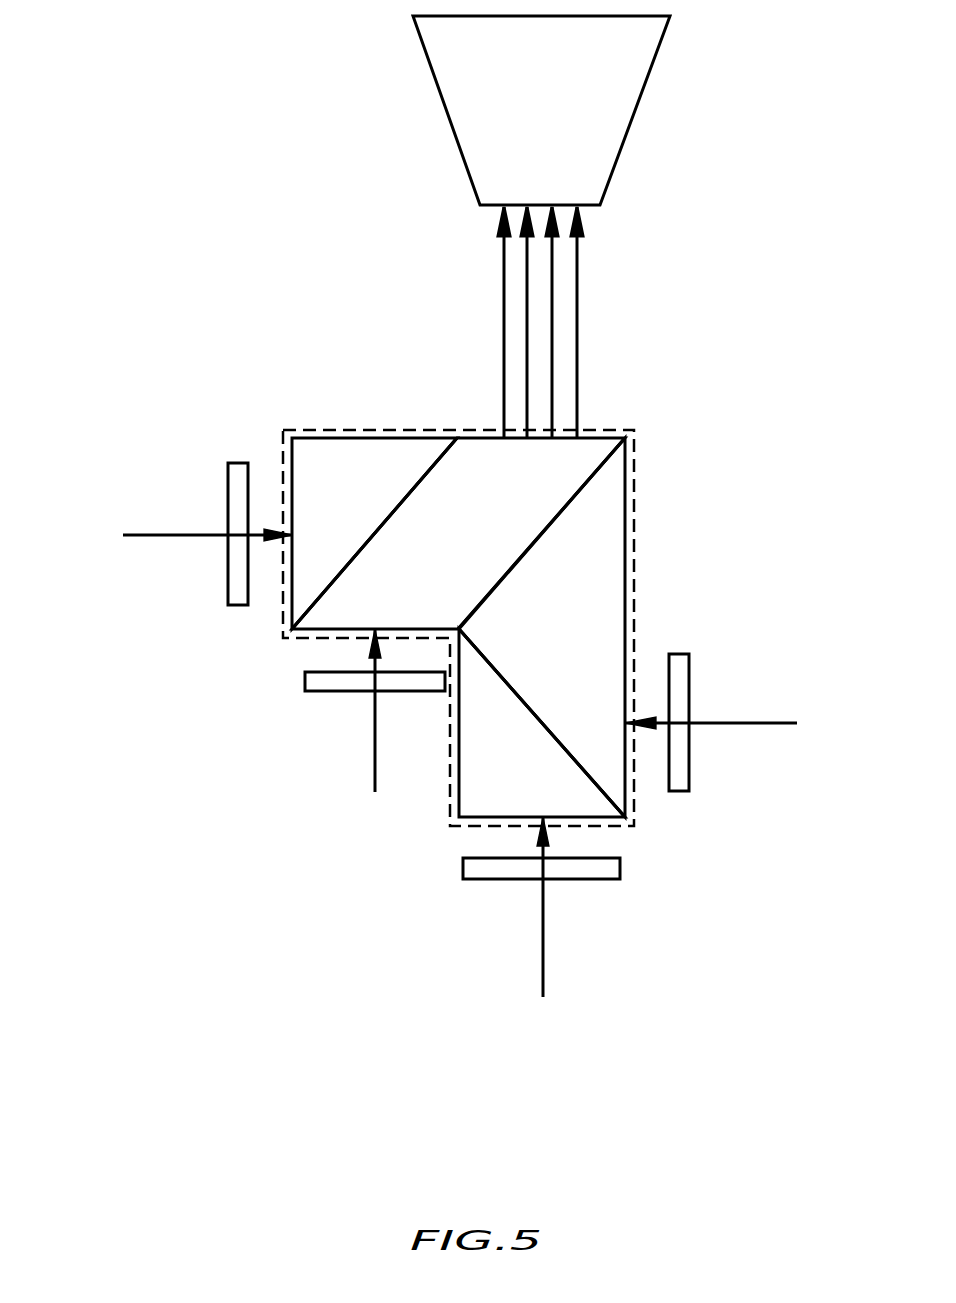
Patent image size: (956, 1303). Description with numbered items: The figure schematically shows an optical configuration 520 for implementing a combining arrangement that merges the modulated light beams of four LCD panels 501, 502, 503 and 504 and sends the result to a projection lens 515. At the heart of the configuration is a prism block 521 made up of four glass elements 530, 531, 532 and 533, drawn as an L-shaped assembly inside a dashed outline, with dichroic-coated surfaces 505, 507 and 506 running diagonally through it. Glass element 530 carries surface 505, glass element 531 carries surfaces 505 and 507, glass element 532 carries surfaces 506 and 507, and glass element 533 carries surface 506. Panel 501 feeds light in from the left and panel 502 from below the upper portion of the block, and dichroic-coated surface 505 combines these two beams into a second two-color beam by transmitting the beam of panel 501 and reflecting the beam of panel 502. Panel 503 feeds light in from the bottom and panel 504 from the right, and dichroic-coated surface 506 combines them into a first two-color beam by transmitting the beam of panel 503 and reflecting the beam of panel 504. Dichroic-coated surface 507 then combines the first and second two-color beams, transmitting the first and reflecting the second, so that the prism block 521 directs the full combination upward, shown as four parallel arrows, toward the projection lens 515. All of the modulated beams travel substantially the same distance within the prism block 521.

The optical configuration 520 is at (130, 192).
The projection lens 515 is at (630, 130).
The prism block 521 is at (612, 425).
The glass element 530 is at (335, 477).
The glass element 531 is at (488, 470).
The glass element 532 is at (572, 568).
The glass element 533 is at (487, 742).
The dichroic-coated surface 505 is at (400, 500).
The dichroic-coated surface 507 is at (590, 480).
The dichroic-coated surface 506 is at (560, 737).
The LCD panel 501 is at (228, 510).
The LCD panel 502 is at (340, 691).
The LCD panel 503 is at (527, 880).
The LCD panel 504 is at (690, 683).